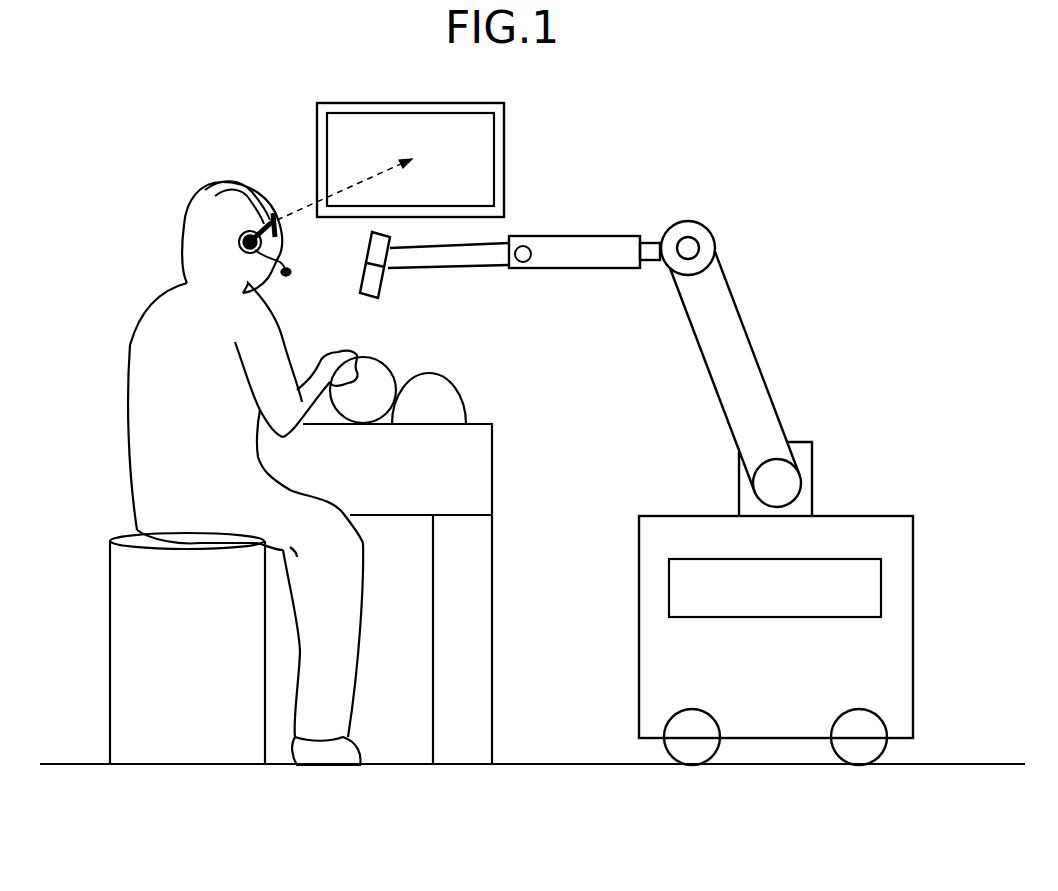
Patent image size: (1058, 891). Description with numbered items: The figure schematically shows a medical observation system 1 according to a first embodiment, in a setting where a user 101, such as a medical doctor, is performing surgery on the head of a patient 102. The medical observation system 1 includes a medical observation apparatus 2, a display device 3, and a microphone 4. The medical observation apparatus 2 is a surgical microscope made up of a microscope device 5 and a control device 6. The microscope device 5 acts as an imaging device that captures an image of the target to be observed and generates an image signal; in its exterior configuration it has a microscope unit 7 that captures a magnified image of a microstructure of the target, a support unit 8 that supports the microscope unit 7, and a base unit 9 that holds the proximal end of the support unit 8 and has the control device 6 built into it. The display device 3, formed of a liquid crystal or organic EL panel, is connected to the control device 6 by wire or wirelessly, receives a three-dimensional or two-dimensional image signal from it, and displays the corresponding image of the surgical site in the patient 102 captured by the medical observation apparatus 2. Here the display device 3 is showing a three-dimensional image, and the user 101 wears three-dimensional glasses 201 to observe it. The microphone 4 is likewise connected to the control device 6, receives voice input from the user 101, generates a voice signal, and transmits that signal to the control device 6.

The medical observation system 1 is at (734, 136).
The medical observation apparatus 2 is at (907, 352).
The display device 3 is at (505, 142).
The microphone 4 is at (290, 273).
The microscope device 5 is at (778, 410).
The control device 6 is at (853, 559).
The microscope unit 7 is at (375, 282).
The support unit 8 is at (708, 356).
The base unit 9 is at (653, 678).
The user 101 is at (146, 320).
The patient 102 is at (443, 395).
The 3D glasses 201 is at (256, 220).